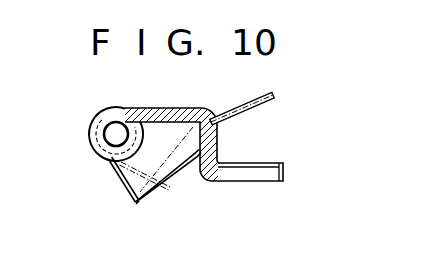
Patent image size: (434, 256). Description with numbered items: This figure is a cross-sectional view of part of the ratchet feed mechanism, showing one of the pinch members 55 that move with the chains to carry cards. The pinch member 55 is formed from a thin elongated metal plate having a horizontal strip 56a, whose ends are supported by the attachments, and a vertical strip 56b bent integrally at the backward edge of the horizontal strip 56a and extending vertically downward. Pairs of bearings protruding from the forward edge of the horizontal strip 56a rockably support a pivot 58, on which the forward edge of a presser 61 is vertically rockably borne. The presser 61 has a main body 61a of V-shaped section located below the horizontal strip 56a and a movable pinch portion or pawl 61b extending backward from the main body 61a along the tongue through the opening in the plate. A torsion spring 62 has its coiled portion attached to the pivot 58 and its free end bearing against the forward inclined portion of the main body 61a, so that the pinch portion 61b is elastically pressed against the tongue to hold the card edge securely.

The pinch member 55 is at (98, 113).
The horizontal strip 56a is at (145, 107).
The vertical strip 56b is at (218, 159).
The pivot 58 is at (114, 135).
The presser 61 is at (162, 185).
The main body 61a is at (137, 203).
The pinch portion 61b is at (281, 164).
The torsion spring 62 is at (124, 183).